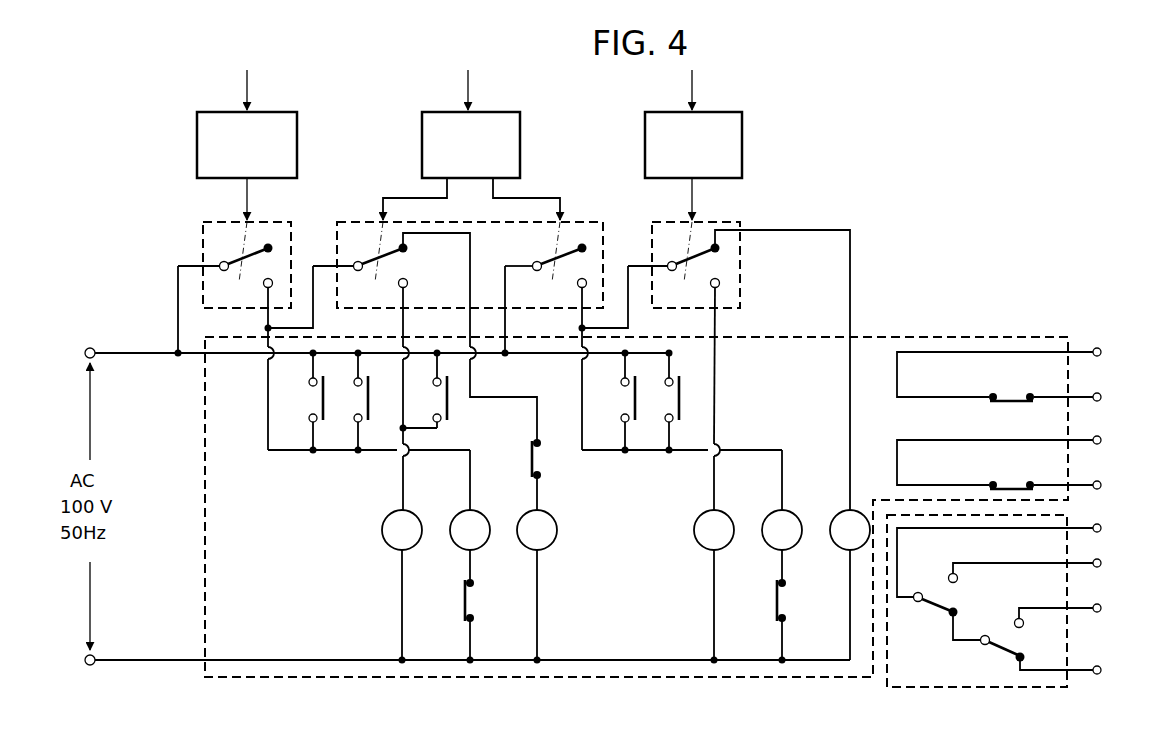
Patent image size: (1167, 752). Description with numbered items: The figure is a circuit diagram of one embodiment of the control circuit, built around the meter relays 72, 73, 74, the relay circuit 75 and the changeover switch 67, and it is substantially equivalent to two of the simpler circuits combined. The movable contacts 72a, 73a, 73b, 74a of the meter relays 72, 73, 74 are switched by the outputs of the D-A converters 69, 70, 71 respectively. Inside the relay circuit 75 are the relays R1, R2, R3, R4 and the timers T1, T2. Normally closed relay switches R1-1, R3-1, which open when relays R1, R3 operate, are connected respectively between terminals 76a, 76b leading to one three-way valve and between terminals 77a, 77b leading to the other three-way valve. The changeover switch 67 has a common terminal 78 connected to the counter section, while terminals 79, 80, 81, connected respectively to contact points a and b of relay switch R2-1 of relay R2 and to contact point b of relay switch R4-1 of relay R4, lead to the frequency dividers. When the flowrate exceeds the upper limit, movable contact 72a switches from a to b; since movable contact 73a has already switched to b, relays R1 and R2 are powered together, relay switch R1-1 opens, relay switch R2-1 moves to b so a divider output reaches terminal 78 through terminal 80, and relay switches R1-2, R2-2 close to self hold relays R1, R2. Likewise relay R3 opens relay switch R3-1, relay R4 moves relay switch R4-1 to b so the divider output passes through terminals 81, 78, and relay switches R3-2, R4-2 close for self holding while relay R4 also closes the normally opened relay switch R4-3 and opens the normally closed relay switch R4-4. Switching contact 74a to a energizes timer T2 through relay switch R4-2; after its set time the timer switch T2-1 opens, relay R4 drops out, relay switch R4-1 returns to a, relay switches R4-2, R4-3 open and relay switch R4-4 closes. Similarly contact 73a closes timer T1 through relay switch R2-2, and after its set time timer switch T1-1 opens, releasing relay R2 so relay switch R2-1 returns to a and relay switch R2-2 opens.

The D-A converter 69 is at (196, 145).
The D-A converter 70 is at (421, 145).
The D-A converter 71 is at (644, 145).
The meter relay 72 is at (211, 222).
The movable contact 72a is at (246, 266).
The meter relay 73 is at (435, 222).
The movable contact 73a is at (383, 266).
The movable contact 73b is at (560, 266).
The meter relay 74 is at (722, 222).
The movable contact 74a is at (695, 266).
The relay circuit 75 is at (570, 677).
The changeover switch 67 is at (990, 620).
The terminal 76a is at (1118, 352).
The terminal 76b is at (1118, 397).
The terminal 77a is at (1118, 440).
The terminal 77b is at (1118, 485).
The common terminal 78 is at (1112, 528).
The terminal 79 is at (1112, 670).
The terminal 80 is at (1112, 608).
The terminal 81 is at (1112, 563).
The relay R1 is at (392, 511).
The relay R2 is at (452, 521).
The relay R3 is at (699, 513).
The relay R4 is at (763, 522).
The timer T1 is at (523, 512).
The timer T2 is at (831, 522).
The relay switch R1-2 is at (311, 399).
The relay switch R2-2 is at (356, 398).
The relay switch R3-2 is at (642, 407).
The relay switch R4-2 is at (686, 402).
The normally opened relay switch R4-3 is at (448, 393).
The normally closed relay switch R4-4 is at (541, 460).
The timer switch T1-1 is at (444, 601).
The timer switch T2-1 is at (776, 586).
The normally closed relay switch R1-1 is at (995, 376).
The normally closed relay switch R3-1 is at (995, 464).
The relay switch R4-1 is at (991, 577).
The relay switch R2-1 is at (997, 648).